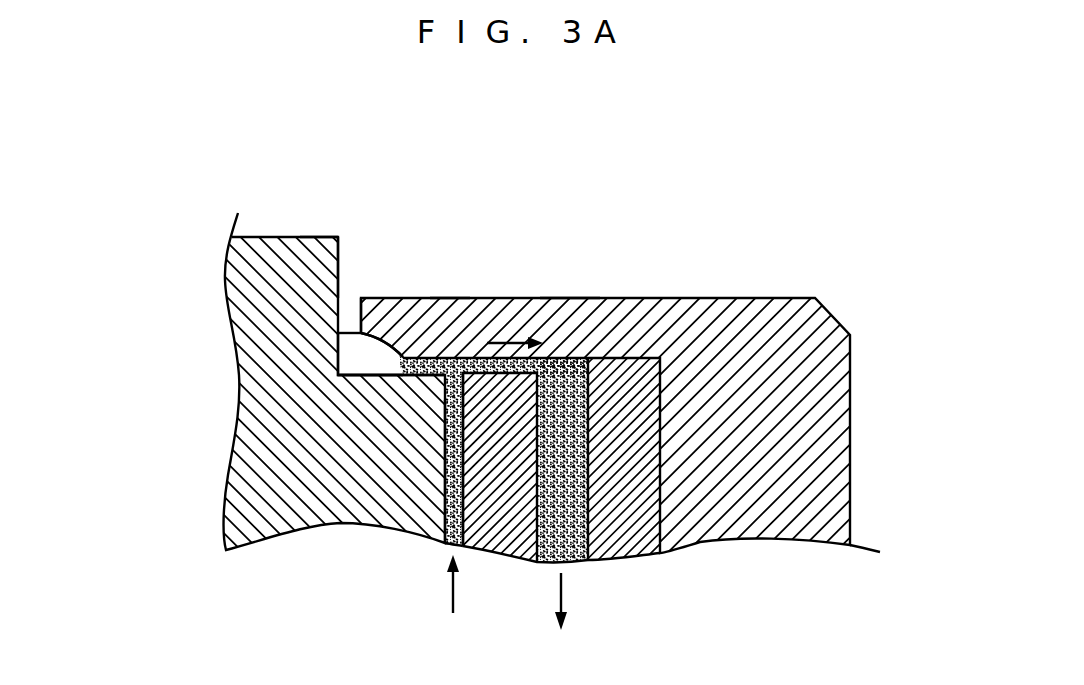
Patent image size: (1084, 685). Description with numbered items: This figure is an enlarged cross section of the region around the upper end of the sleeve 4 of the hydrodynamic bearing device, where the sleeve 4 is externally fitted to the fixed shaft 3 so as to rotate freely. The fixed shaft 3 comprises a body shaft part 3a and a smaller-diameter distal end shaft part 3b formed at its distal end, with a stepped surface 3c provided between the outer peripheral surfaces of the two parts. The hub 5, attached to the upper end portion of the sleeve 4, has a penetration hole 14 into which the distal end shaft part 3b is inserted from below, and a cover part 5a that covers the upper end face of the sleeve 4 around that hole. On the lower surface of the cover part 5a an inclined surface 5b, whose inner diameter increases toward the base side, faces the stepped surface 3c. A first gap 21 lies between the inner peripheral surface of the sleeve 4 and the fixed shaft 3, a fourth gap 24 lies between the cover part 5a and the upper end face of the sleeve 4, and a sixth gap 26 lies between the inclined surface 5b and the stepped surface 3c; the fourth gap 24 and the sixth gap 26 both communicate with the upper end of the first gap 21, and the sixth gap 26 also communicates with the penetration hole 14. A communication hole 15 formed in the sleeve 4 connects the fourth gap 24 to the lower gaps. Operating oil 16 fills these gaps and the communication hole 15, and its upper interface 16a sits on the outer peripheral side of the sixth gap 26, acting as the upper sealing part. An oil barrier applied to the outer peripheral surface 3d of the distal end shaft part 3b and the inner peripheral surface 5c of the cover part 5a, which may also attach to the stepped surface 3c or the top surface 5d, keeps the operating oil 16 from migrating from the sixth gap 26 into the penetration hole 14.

The fixed shaft 3 is at (290, 238).
The body shaft part 3a is at (395, 500).
The distal end shaft part 3b is at (315, 238).
The stepped surface 3c is at (357, 376).
The outer peripheral surface of the distal end shaft part 3d is at (338, 262).
The sleeve 4 is at (660, 519).
The hub 5 is at (850, 413).
The cover part 5a is at (563, 305).
The inclined surface 5b is at (378, 358).
The inner peripheral surface of the cover part 5c is at (359, 312).
The top surface of the cover part 5d is at (450, 297).
The penetration hole 14 is at (345, 305).
The communication hole 15 is at (572, 548).
The operating oil 16 is at (466, 525).
The interface 16a is at (401, 352).
The first gap 21 is at (463, 473).
The fourth gap 24 is at (481, 352).
The sixth gap 26 is at (393, 343).